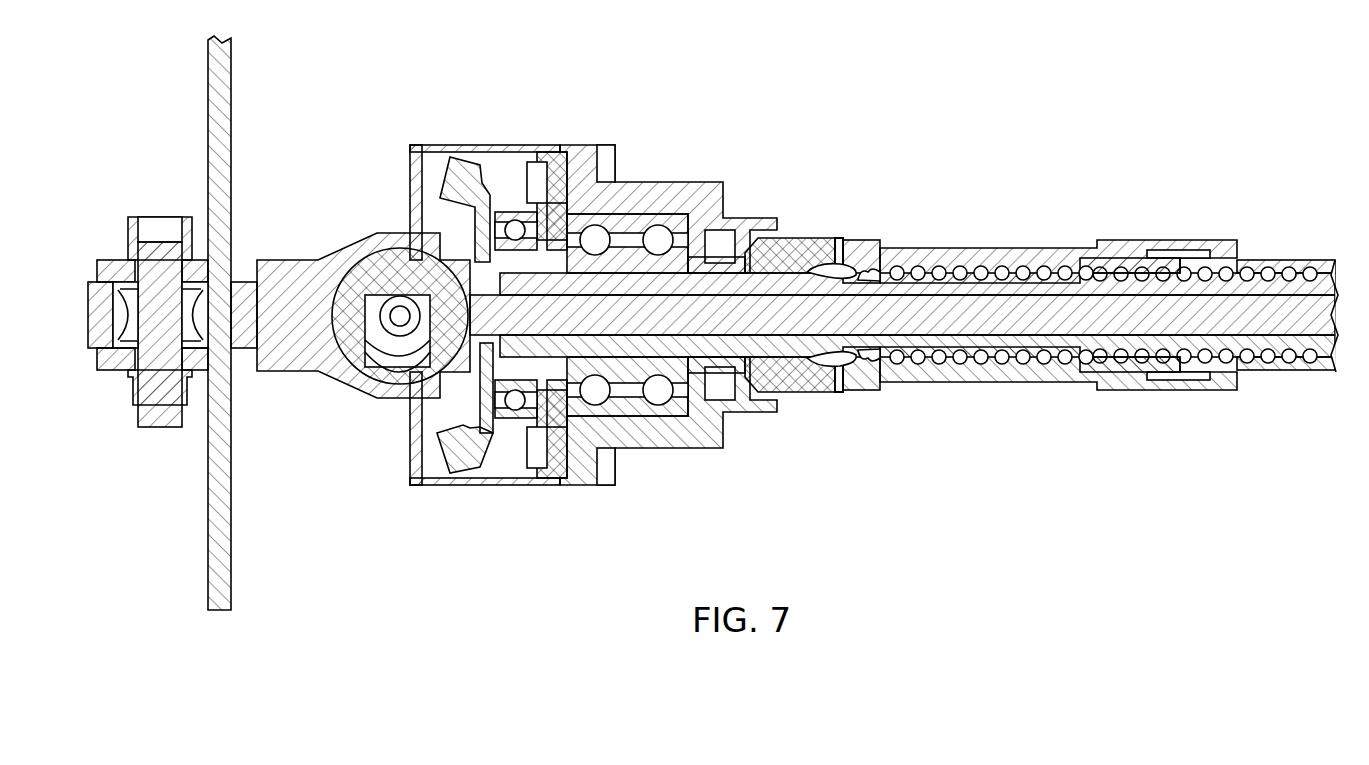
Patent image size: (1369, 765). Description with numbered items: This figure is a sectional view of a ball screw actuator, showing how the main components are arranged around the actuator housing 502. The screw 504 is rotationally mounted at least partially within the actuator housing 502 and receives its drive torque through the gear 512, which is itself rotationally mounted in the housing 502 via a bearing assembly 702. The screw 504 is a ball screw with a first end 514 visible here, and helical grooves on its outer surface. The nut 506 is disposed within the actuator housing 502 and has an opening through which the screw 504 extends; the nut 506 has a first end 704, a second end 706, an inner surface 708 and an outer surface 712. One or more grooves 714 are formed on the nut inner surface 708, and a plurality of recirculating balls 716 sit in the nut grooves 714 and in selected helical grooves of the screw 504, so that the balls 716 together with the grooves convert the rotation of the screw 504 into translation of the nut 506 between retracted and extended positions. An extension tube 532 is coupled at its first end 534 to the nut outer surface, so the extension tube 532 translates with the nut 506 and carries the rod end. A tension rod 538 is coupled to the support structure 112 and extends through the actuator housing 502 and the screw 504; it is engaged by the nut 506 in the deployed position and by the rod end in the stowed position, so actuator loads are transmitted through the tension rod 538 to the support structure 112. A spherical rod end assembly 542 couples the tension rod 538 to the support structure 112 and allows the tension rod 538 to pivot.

The support structure 112 is at (209, 95).
The actuator housing 502 is at (572, 145).
The screw 504 is at (1271, 283).
The nut 506 is at (962, 248).
The gear 512 is at (451, 160).
The first end 514 is at (658, 408).
The extension tube 532 is at (1291, 378).
The first end 534 is at (1166, 381).
The tension rod 538 is at (927, 332).
The spherical rod end assembly 542 is at (109, 370).
The bearing assembly 702 is at (506, 212).
The first end 704 is at (843, 240).
The second end 706 is at (1146, 260).
The inner surface 708 is at (1030, 266).
The outer surface 712 is at (901, 248).
The grooves 714 is at (1092, 270).
The recirculating balls 716 is at (1013, 364).